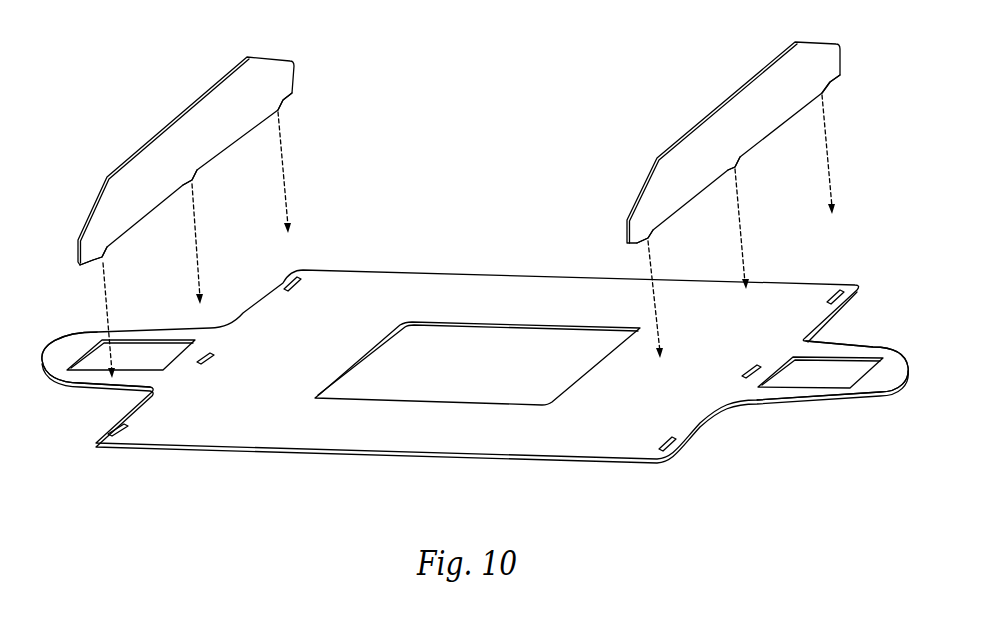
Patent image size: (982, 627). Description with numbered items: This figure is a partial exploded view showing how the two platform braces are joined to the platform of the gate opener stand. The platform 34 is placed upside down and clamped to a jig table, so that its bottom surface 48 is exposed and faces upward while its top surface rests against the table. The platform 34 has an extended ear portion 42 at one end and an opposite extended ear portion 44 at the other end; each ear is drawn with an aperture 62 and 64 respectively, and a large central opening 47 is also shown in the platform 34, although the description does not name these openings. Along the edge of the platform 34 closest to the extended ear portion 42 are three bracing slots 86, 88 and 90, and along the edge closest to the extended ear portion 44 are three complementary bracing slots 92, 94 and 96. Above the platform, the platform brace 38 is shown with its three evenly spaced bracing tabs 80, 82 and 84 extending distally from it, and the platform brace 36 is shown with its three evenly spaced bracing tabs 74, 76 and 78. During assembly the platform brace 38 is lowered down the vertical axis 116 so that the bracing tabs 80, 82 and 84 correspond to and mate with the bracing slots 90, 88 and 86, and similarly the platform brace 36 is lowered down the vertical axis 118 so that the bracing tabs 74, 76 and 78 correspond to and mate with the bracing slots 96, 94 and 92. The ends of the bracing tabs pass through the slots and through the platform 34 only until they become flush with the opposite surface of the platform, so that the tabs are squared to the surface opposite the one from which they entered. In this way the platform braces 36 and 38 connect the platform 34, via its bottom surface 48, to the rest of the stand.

The platform 34 is at (489, 391).
The platform brace 36 is at (757, 148).
The platform brace 38 is at (217, 163).
The extended ear portion 42 is at (73, 337).
The extended ear portion 44 is at (875, 343).
The central opening 47 is at (463, 380).
The bottom surface 48 is at (264, 414).
The first ear aperture 62 is at (132, 353).
The second ear aperture 64 is at (813, 380).
The bracing tab 74 is at (828, 90).
The bracing tab 76 is at (738, 162).
The bracing tab 78 is at (652, 233).
The bracing tab 80 is at (282, 107).
The bracing tab 82 is at (193, 177).
The bracing tab 84 is at (103, 250).
The bracing slot 86 is at (127, 427).
The bracing slot 88 is at (212, 357).
The bracing slot 90 is at (297, 287).
The bracing slot 92 is at (662, 445).
The bracing slot 94 is at (742, 372).
The bracing slot 96 is at (828, 296).
The vertical axis 116 is at (283, 168).
The vertical axis 118 is at (830, 147).